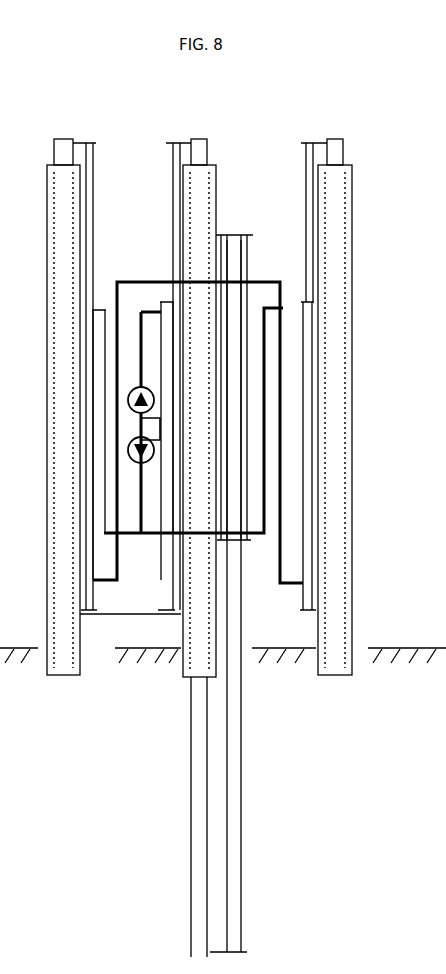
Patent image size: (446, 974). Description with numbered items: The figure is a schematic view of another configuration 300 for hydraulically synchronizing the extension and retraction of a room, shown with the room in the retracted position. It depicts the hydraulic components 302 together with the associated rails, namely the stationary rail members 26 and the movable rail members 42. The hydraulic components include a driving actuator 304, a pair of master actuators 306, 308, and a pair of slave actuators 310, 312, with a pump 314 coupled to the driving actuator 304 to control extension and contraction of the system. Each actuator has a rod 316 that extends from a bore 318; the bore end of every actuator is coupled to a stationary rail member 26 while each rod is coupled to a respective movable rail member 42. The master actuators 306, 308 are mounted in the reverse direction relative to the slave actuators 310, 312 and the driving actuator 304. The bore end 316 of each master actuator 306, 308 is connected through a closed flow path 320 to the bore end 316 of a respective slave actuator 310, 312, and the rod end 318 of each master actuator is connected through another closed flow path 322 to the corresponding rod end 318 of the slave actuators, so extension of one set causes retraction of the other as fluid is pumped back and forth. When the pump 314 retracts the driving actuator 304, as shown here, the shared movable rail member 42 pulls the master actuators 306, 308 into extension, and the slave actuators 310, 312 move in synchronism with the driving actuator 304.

The stationary rail member 26 is at (47, 212).
The movable rail member 42 is at (55, 152).
The hydraulic synchronization system configuration 300 is at (122, 802).
The hydraulic components 302 is at (115, 650).
The driving actuator 304 is at (160, 597).
The master actuator 306 is at (228, 234).
The master actuator 308 is at (243, 244).
The slave actuator 310 is at (95, 590).
The slave actuator 312 is at (303, 594).
The pump 314 is at (130, 376).
The rod 316 is at (259, 234).
The bore 318 is at (98, 264).
The closed flow path 320 is at (268, 432).
The closed flow path 322 is at (283, 360).